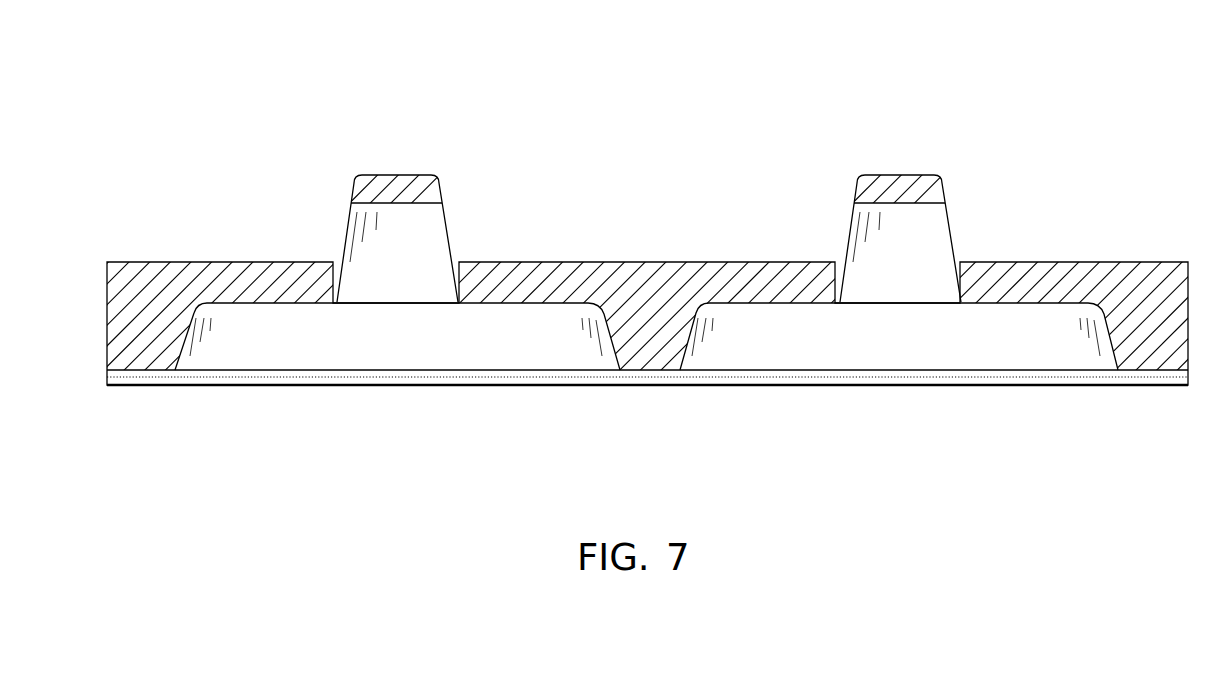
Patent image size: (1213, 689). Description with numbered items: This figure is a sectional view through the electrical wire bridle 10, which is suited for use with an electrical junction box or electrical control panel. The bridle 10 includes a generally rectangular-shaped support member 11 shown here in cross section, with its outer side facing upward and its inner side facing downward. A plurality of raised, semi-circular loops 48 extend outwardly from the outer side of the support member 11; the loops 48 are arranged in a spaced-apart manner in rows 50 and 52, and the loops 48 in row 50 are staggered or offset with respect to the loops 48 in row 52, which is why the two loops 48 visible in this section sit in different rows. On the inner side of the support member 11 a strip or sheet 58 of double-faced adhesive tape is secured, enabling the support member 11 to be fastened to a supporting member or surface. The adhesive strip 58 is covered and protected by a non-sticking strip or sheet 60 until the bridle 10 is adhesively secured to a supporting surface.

The electrical wire bridle 10 is at (606, 247).
The support member 11 is at (196, 260).
The raised semi-circular loops 48 is at (400, 173).
The row 50 is at (470, 227).
The row 52 is at (958, 227).
The strip of double-faced adhesive tape 58 is at (443, 373).
The non-sticking strip 60 is at (482, 388).